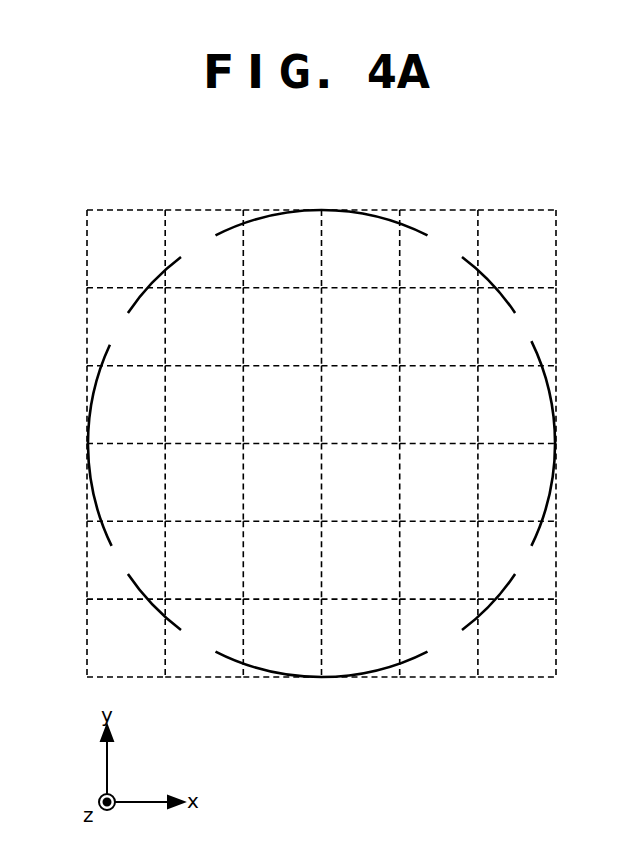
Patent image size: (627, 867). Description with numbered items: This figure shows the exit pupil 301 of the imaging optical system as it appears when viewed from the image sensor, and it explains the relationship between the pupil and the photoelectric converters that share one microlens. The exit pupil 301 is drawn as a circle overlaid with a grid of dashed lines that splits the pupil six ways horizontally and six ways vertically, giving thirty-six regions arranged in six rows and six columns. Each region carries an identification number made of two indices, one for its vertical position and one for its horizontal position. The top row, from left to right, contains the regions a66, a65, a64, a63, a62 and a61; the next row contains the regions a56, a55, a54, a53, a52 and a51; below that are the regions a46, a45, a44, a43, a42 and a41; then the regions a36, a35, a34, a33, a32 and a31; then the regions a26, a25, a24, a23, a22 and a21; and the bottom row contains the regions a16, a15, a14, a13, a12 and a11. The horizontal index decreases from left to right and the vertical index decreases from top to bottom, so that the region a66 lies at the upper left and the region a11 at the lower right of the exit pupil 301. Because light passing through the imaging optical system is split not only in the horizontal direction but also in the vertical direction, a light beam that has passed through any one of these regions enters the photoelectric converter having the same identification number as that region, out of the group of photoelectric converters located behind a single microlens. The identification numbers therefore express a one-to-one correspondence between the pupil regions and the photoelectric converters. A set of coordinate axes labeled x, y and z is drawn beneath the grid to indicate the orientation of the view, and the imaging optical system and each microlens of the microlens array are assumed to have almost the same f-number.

The exit pupil 301 is at (230, 223).
The pupil region a11 is at (517, 638).
The pupil region a12 is at (439, 638).
The pupil region a13 is at (361, 638).
The pupil region a14 is at (282, 638).
The pupil region a15 is at (204, 638).
The pupil region a16 is at (126, 638).
The pupil region a21 is at (517, 560).
The pupil region a22 is at (439, 560).
The pupil region a23 is at (361, 560).
The pupil region a24 is at (282, 560).
The pupil region a25 is at (204, 560).
The pupil region a26 is at (126, 560).
The pupil region a31 is at (517, 483).
The pupil region a32 is at (439, 483).
The pupil region a33 is at (361, 483).
The pupil region a34 is at (282, 483).
The pupil region a35 is at (204, 483).
The pupil region a36 is at (126, 483).
The pupil region a41 is at (517, 405).
The pupil region a42 is at (439, 405).
The pupil region a43 is at (361, 405).
The pupil region a44 is at (282, 405).
The pupil region a45 is at (204, 405).
The pupil region a46 is at (126, 405).
The pupil region a51 is at (517, 327).
The pupil region a52 is at (439, 327).
The pupil region a53 is at (361, 327).
The pupil region a54 is at (282, 327).
The pupil region a55 is at (204, 327).
The pupil region a56 is at (126, 327).
The pupil region a61 is at (517, 249).
The pupil region a62 is at (439, 249).
The pupil region a63 is at (361, 249).
The pupil region a64 is at (282, 249).
The pupil region a65 is at (204, 249).
The pupil region a66 is at (126, 249).